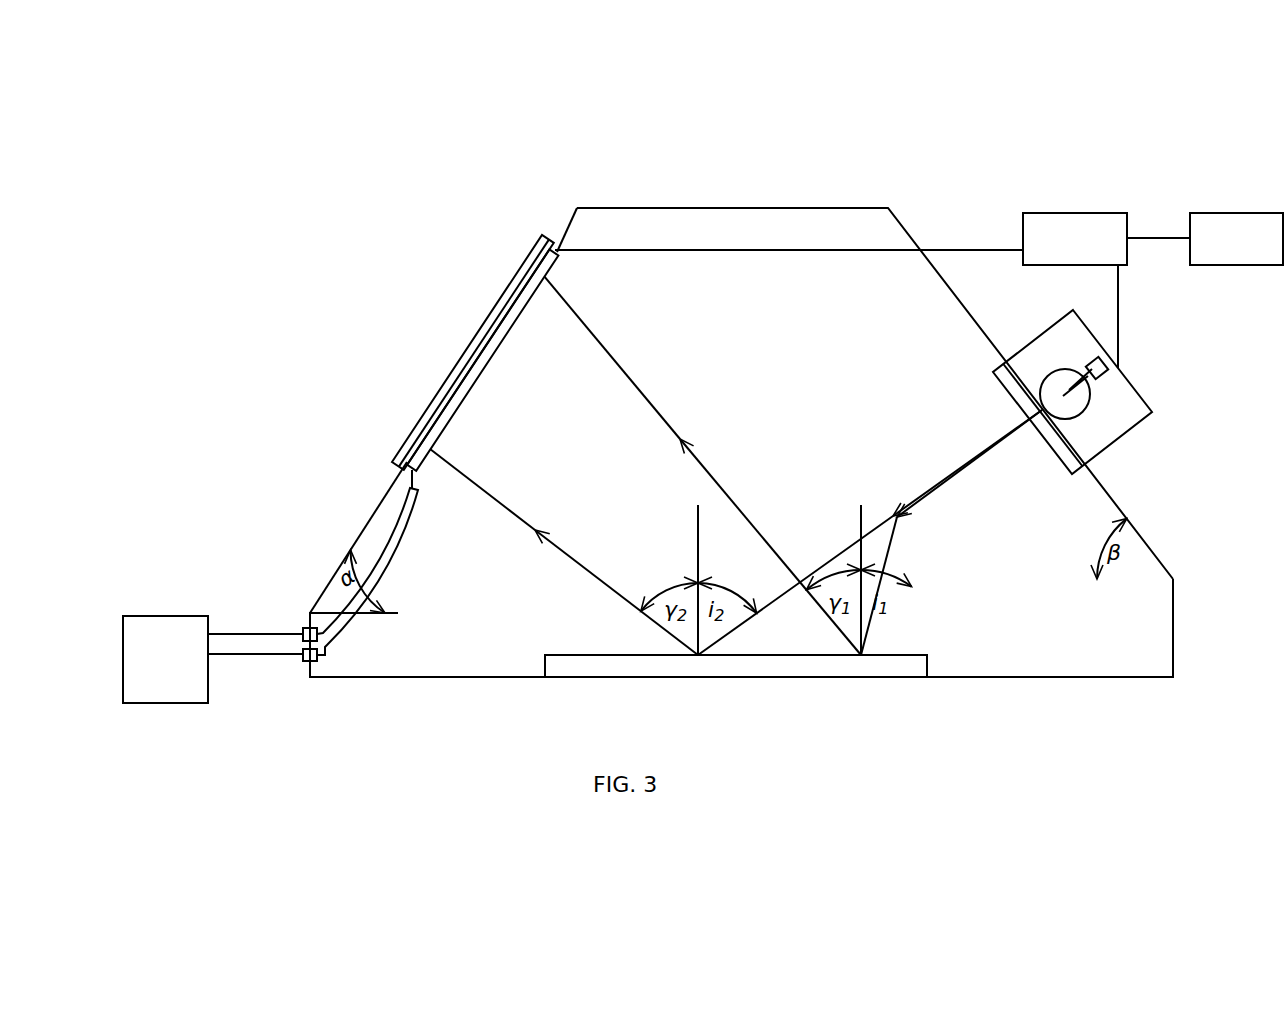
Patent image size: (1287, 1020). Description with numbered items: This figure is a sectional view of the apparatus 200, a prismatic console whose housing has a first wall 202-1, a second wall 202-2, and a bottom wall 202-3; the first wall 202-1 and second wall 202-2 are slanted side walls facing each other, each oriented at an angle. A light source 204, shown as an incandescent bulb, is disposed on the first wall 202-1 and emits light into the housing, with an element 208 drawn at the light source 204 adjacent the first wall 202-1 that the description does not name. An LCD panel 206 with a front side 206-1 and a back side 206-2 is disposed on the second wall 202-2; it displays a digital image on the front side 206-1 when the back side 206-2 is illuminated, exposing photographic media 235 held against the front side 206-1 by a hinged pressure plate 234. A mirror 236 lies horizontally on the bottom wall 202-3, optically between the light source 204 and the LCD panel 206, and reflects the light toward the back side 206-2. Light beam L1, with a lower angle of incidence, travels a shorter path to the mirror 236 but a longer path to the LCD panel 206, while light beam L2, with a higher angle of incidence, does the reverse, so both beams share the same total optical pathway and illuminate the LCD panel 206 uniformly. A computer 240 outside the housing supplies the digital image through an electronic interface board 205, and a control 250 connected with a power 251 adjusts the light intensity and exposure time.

The apparatus 200 is at (405, 124).
The first wall 202-1 is at (912, 238).
The second wall 202-2 is at (372, 520).
The bottom wall 202-3 is at (465, 679).
The light source 204 is at (1091, 403).
The electronic interface board 205 is at (303, 658).
The LCD panel 206 is at (543, 313).
The front side 206-1 is at (510, 307).
The back side 206-2 is at (558, 255).
The window 208 is at (1107, 494).
The plate 234 is at (533, 248).
The photographic media 235 is at (417, 440).
The mirror 236 is at (832, 667).
The computer 240 is at (157, 616).
The control 250 is at (1063, 213).
The power 251 is at (1210, 213).
The light beam L1 is at (951, 532).
The light beam L2 is at (870, 532).